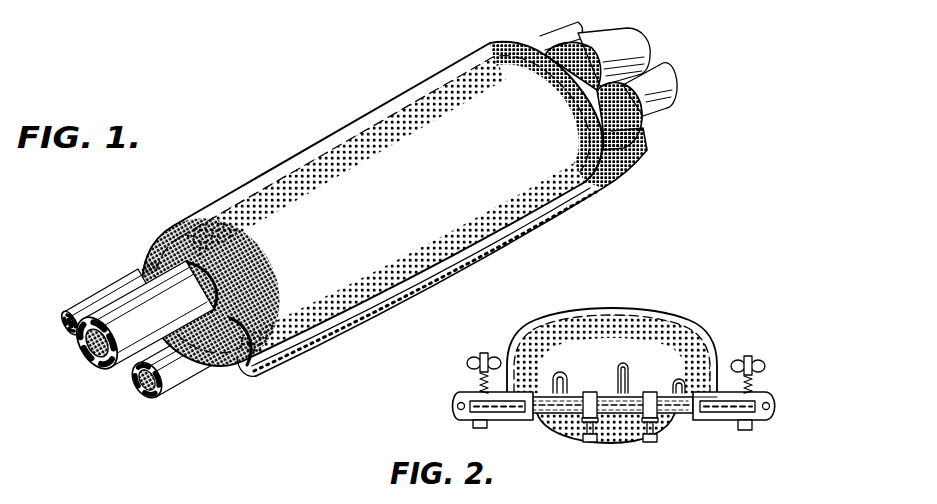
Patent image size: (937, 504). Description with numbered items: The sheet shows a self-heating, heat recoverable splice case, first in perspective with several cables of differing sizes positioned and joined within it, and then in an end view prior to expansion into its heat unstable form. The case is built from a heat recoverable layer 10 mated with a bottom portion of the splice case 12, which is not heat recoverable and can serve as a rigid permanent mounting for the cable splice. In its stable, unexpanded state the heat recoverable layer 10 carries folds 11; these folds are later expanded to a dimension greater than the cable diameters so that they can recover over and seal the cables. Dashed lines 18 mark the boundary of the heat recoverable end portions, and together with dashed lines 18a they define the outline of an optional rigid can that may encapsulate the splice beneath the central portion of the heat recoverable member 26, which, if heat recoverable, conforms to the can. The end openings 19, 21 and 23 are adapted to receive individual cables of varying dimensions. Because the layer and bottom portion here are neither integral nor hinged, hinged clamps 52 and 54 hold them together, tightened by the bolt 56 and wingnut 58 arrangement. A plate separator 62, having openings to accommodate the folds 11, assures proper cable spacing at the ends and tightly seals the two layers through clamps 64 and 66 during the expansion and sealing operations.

In FIG. 1, the heat recoverable layer 10 is at (277, 351).
In FIG. 2, the heat recoverable layer 10 is at (615, 406).
In FIG. 2, the folds 11 is at (553, 372).
In FIG. 1, the bottom portion of the splice case 12 is at (252, 368).
In FIG. 1, the dashed lines 18 is at (327, 343).
In FIG. 2, the dashed lines 18 is at (712, 330).
In FIG. 2, the dashed lines 18a is at (686, 338).
In FIG. 1, the end opening 19 is at (237, 367).
In FIG. 1, the end opening 21 is at (232, 247).
In FIG. 2, the end opening 21 is at (618, 500).
In FIG. 1, the end opening 23 is at (147, 263).
In FIG. 1, the heat recoverable member 26 is at (320, 142).
In FIG. 2, the heat recoverable member 26 is at (607, 308).
In FIG. 2, the hinged clamp 52 is at (770, 420).
In FIG. 2, the hinged clamp 54 is at (448, 420).
In FIG. 2, the bolt 56 is at (753, 378).
In FIG. 2, the wingnut 58 is at (753, 358).
In FIG. 2, the plate separator 62 is at (545, 418).
In FIG. 2, the clamp 64 is at (670, 430).
In FIG. 2, the clamp 66 is at (562, 428).